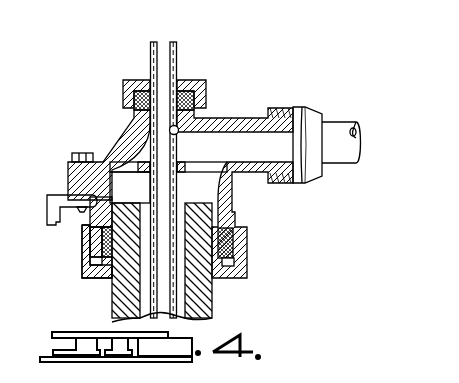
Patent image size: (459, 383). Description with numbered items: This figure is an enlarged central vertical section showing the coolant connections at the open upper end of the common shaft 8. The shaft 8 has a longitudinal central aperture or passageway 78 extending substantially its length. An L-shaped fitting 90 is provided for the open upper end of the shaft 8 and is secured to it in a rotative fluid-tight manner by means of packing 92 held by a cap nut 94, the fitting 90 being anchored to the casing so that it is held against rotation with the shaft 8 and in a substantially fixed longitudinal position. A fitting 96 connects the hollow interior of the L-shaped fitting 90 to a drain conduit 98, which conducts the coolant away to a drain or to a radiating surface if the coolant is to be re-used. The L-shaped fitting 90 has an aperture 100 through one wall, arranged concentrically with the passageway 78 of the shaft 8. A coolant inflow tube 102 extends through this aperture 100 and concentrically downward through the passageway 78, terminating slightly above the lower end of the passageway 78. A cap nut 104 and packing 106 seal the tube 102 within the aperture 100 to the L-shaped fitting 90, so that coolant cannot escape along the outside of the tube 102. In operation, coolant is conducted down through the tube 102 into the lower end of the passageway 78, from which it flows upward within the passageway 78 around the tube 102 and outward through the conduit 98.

The coolant inflow tube 102 is at (178, 44).
The cap nut 104 is at (198, 82).
The packing 106 is at (184, 90).
The L-shaped fitting 90 is at (228, 118).
The aperture 100 is at (178, 133).
The fitting 96 is at (295, 111).
The drain conduit 98 is at (337, 123).
The packing 92 is at (247, 238).
The cap nut 94 is at (245, 267).
The longitudinal central aperture or passageway 78 is at (140, 298).
The common shaft 8 is at (207, 300).